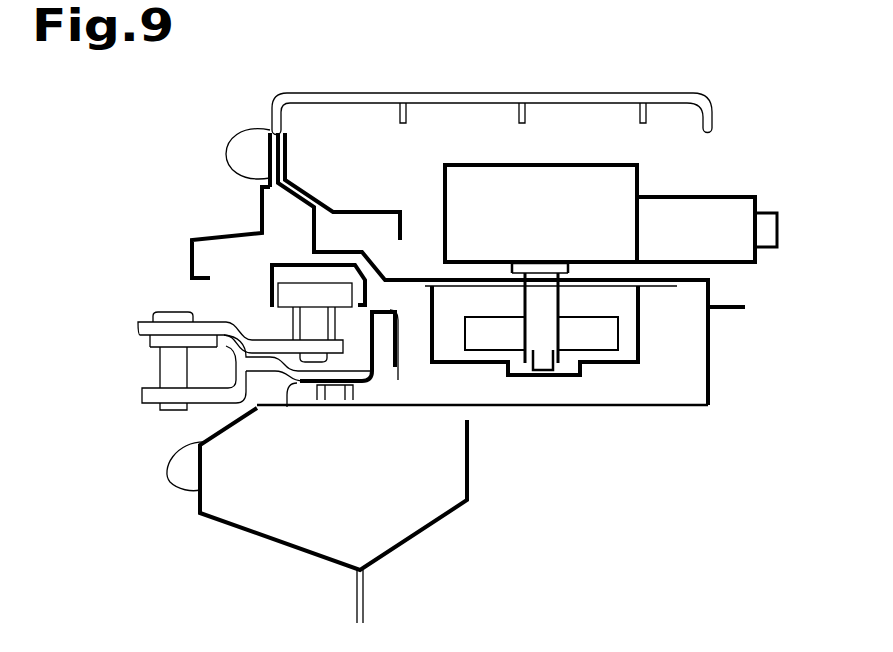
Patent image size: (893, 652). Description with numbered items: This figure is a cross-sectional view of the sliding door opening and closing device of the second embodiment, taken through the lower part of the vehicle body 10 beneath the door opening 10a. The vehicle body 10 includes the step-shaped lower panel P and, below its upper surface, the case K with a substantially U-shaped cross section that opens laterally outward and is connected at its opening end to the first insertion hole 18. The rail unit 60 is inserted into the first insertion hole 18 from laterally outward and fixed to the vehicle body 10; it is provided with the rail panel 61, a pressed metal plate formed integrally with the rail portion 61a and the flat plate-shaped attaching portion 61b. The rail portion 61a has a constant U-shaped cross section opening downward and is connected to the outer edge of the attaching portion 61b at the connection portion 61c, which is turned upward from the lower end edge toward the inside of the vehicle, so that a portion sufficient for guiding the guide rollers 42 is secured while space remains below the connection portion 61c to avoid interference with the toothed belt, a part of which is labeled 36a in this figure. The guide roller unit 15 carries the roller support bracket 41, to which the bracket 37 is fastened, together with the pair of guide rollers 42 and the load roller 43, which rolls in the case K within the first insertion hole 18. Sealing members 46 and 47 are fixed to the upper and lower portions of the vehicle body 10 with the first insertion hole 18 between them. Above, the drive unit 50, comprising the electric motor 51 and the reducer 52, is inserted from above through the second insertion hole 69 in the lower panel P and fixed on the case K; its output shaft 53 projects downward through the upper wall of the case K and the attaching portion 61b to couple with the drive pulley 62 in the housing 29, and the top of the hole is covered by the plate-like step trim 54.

The vehicle body 10 is at (210, 235).
The door opening 10a is at (275, 127).
The guide roller unit 15 is at (140, 392).
The first insertion hole 18 is at (215, 425).
The housing 29 is at (641, 341).
The bolt 36a is at (394, 404).
The bracket 37 is at (146, 338).
The roller support bracket 41 is at (143, 318).
The guide rollers 42 is at (276, 297).
The load roller 43 is at (290, 406).
The sealing member 46 is at (226, 152).
The sealing member 47 is at (176, 490).
The drive unit 50 is at (611, 189).
The electric motor 51 is at (700, 200).
The reducer 52 is at (548, 165).
The output shaft 53 is at (564, 300).
The step trim 54 is at (497, 93).
The rail unit 60 is at (567, 397).
The rail panel 61 is at (406, 280).
The rail portion 61a is at (298, 250).
The attaching portion 61b is at (665, 278).
The connection portion 61c is at (398, 297).
The drive pulley 62 is at (465, 327).
The second insertion hole 69 is at (405, 232).
The lower panel P is at (364, 208).
The case K is at (712, 362).